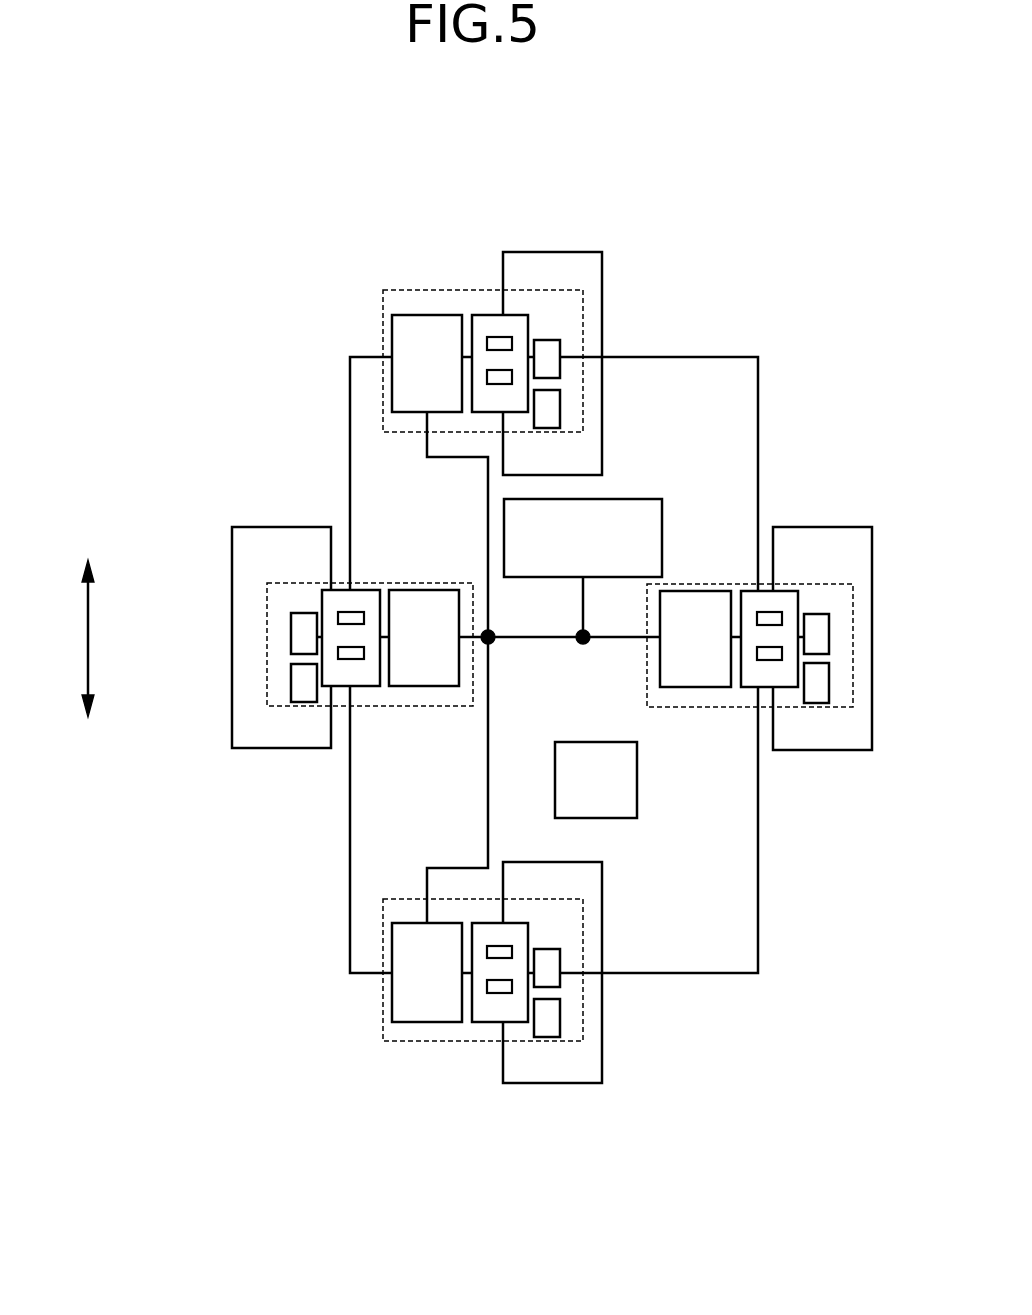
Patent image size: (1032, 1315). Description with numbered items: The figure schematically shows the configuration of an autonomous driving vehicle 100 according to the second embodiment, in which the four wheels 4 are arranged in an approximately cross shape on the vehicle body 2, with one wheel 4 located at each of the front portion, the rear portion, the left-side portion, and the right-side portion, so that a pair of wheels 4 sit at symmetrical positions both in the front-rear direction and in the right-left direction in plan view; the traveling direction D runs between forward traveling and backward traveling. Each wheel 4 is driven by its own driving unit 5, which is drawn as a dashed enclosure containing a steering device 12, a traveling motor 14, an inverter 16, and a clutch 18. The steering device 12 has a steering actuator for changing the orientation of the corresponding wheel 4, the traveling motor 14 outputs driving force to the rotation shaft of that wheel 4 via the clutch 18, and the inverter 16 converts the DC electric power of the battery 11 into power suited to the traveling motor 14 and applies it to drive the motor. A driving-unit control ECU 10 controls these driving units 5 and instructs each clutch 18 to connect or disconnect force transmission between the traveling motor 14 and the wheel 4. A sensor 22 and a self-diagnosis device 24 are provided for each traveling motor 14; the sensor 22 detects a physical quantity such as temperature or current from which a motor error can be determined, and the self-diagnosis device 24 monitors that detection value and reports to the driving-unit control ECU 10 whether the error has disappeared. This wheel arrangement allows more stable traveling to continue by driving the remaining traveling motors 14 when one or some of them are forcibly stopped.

The autonomous driving vehicle 100 is at (556, 166).
The vehicle body 2 is at (688, 357).
The wheel 4 is at (574, 252).
The driving unit 5 is at (425, 290).
The driving-unit control ECU 10 is at (630, 499).
The battery 11 is at (622, 820).
The steering device 12 is at (560, 412).
The traveling motor 14 is at (485, 315).
The inverter 16 is at (383, 332).
The clutch 18 is at (560, 350).
The sensor 22 is at (512, 338).
The self-diagnosis device 24 is at (512, 380).
The traveling direction D is at (90, 637).